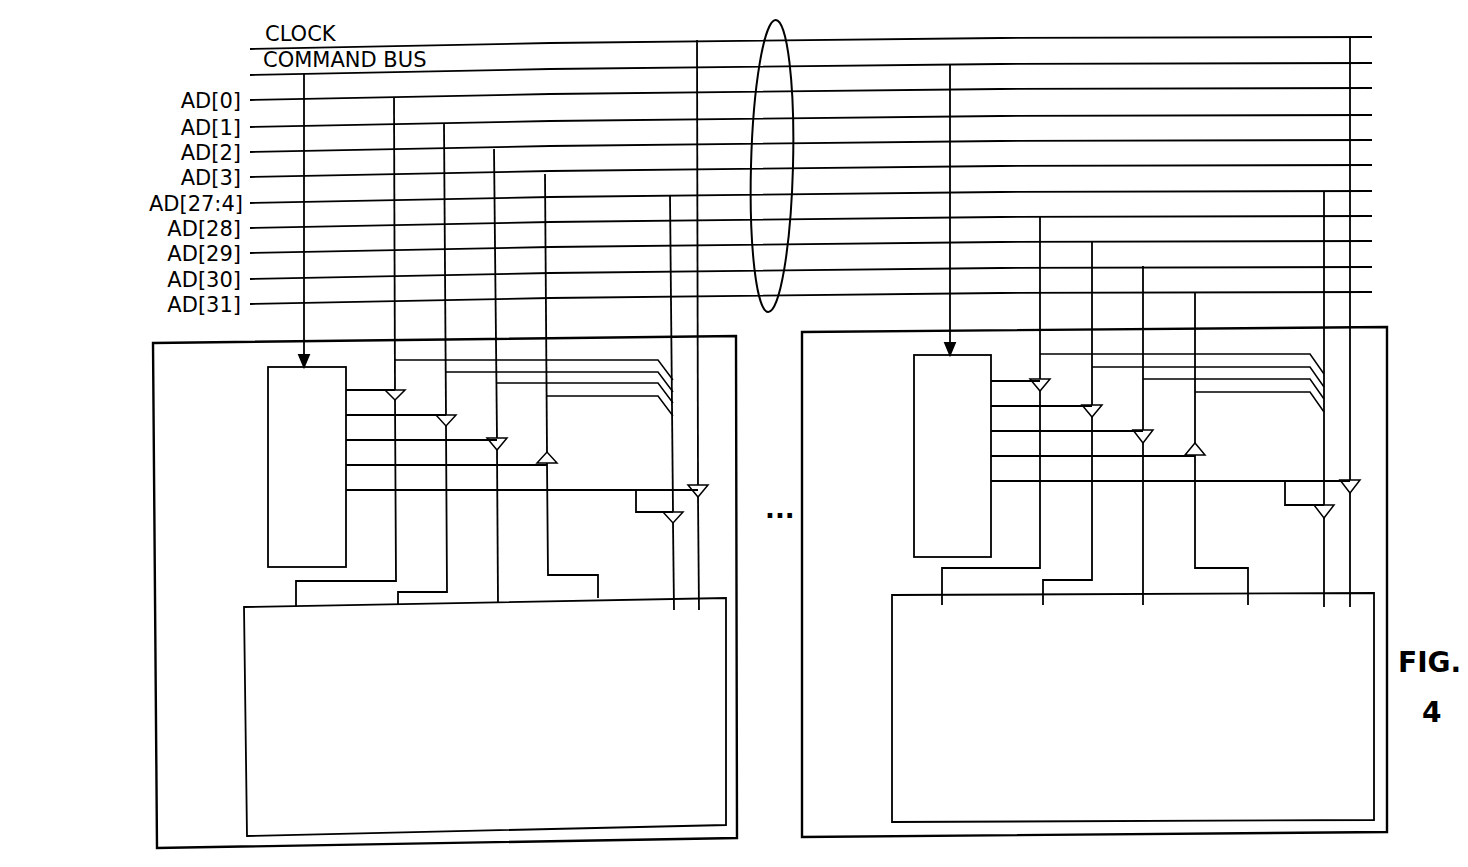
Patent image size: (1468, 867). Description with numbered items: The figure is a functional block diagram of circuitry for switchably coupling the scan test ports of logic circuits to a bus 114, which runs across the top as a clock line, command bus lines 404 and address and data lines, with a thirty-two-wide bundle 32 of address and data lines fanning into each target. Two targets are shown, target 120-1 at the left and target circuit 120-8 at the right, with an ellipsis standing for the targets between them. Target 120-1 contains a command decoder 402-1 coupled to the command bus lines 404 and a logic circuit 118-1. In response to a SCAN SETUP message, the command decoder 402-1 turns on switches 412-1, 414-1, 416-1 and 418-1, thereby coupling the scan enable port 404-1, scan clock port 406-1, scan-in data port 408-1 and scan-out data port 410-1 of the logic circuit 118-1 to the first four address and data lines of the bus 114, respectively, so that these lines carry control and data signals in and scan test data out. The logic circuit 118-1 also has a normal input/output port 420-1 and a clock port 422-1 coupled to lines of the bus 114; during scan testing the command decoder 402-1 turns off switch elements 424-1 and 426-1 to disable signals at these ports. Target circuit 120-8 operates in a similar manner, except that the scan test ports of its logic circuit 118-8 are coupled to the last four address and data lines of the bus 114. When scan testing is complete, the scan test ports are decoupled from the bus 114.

The bus 114 is at (790, 28).
The command bus lines 404 is at (522, 71).
The target 120-1 is at (236, 443).
The target circuit 120-8 is at (890, 478).
The command decoder 402-1 is at (272, 515).
The switch 412-1 is at (392, 386).
The switch 414-1 is at (442, 412).
The switch 416-1 is at (493, 436).
The switch 418-1 is at (545, 450).
The switch element 424-1 is at (670, 524).
The switch element 426-1 is at (702, 484).
The 32-bit bus width indicator 32 is at (680, 440).
The scan enable port 404-1 is at (297, 612).
The scan clock port 406-1 is at (400, 612).
The scan-in data port 408-1 is at (510, 607).
The scan-out data port 410-1 is at (614, 605).
The input/output port 420-1 is at (672, 612).
The clock port 422-1 is at (702, 613).
The logic circuit 118-1 is at (550, 750).
The logic circuit 118-8 is at (1133, 707).